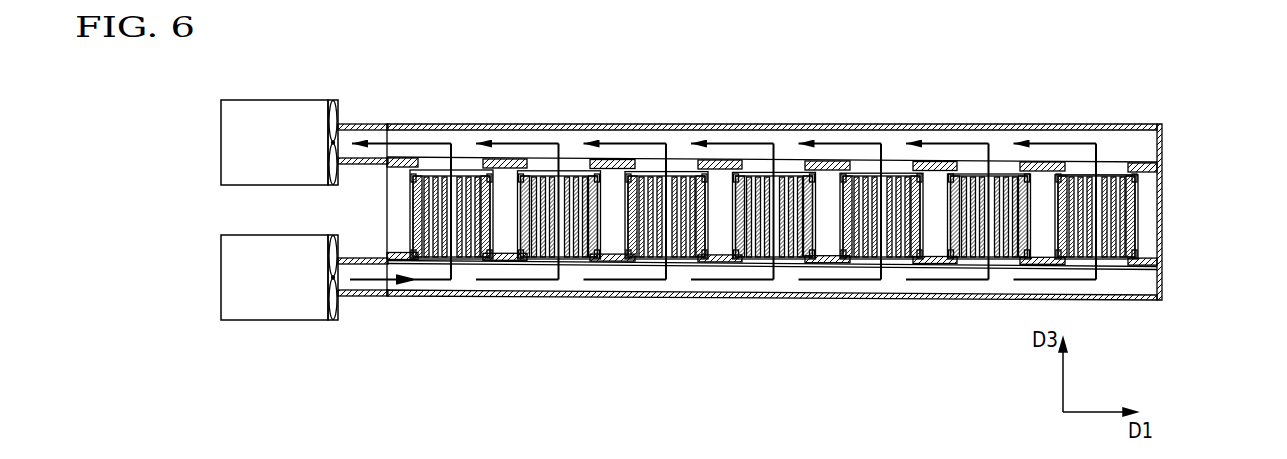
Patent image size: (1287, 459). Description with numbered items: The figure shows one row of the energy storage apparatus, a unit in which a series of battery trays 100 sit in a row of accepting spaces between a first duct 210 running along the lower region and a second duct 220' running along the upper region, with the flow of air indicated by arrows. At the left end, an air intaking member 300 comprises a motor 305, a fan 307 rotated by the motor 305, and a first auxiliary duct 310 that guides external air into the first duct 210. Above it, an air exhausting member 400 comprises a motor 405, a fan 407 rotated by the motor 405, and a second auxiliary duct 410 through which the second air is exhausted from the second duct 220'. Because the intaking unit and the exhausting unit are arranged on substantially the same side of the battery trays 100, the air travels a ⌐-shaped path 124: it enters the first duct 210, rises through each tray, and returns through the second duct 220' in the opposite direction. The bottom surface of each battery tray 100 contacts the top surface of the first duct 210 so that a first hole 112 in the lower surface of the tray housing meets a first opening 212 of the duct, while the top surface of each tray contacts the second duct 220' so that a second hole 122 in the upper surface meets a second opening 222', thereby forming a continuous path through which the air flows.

The battery tray 100 is at (1163, 218).
The first hole 112 is at (437, 262).
The second hole 122 is at (440, 180).
The air flow path 124 is at (733, 142).
The first duct 210 is at (1145, 281).
The first opening 212 is at (467, 265).
The second duct 220' is at (807, 143).
The second opening 222' is at (772, 116).
The air intaking member 300 is at (413, 368).
The motor 305 is at (274, 312).
The fan 307 is at (333, 322).
The first auxiliary duct 310 is at (363, 297).
The air exhausting member 400 is at (392, 53).
The motor 405 is at (258, 110).
The fan 407 is at (327, 100).
The second auxiliary duct 410 is at (362, 124).